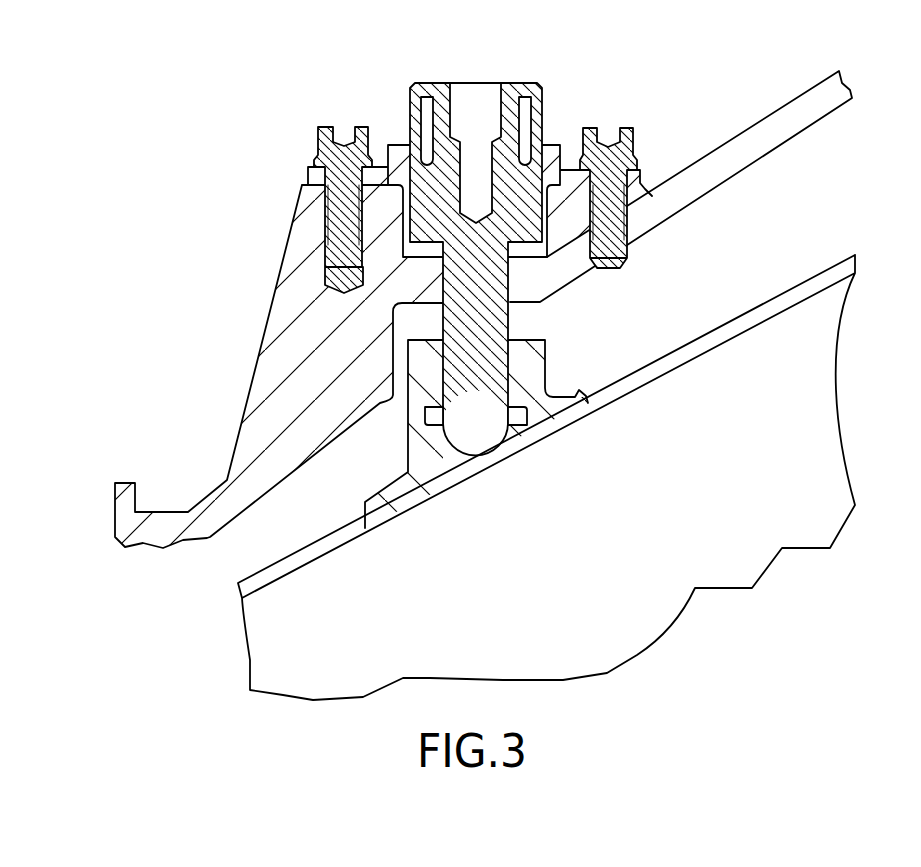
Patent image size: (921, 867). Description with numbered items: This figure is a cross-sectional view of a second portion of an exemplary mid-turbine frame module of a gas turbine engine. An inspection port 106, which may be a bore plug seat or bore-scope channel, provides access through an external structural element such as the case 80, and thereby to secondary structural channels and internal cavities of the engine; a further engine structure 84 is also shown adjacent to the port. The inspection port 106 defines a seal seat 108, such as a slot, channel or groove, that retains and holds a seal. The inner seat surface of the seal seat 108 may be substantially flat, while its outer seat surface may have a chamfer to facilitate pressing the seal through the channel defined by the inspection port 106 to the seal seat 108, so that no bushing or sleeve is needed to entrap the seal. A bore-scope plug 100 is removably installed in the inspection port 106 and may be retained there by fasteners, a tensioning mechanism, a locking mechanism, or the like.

The bore-scope plug 100 is at (532, 83).
The case 80 is at (790, 113).
The second panel 84 is at (808, 378).
The inspection port 106 is at (461, 478).
The seal seat 108 is at (530, 440).